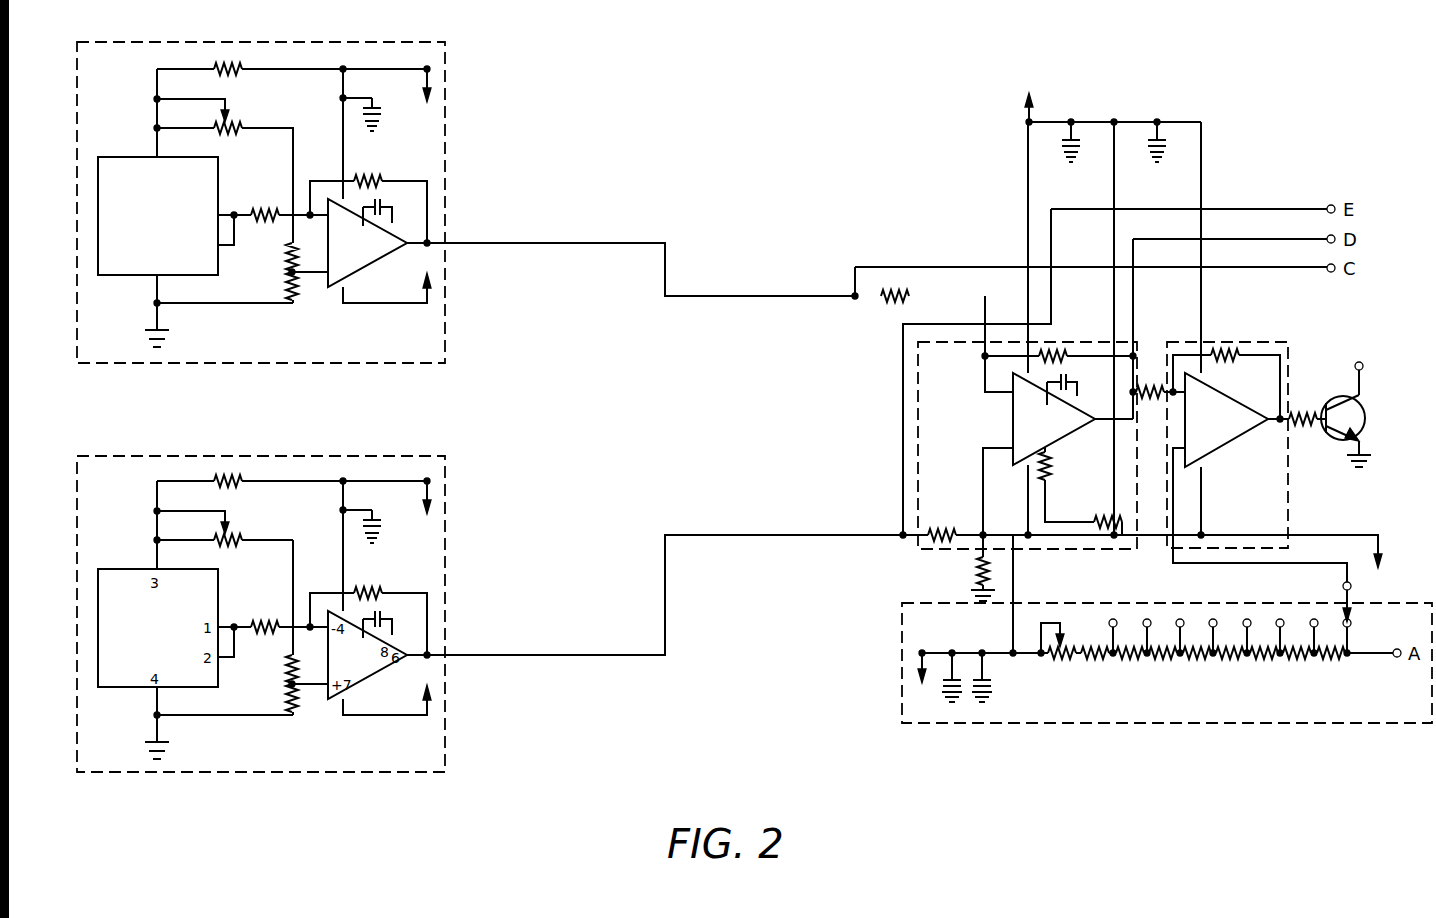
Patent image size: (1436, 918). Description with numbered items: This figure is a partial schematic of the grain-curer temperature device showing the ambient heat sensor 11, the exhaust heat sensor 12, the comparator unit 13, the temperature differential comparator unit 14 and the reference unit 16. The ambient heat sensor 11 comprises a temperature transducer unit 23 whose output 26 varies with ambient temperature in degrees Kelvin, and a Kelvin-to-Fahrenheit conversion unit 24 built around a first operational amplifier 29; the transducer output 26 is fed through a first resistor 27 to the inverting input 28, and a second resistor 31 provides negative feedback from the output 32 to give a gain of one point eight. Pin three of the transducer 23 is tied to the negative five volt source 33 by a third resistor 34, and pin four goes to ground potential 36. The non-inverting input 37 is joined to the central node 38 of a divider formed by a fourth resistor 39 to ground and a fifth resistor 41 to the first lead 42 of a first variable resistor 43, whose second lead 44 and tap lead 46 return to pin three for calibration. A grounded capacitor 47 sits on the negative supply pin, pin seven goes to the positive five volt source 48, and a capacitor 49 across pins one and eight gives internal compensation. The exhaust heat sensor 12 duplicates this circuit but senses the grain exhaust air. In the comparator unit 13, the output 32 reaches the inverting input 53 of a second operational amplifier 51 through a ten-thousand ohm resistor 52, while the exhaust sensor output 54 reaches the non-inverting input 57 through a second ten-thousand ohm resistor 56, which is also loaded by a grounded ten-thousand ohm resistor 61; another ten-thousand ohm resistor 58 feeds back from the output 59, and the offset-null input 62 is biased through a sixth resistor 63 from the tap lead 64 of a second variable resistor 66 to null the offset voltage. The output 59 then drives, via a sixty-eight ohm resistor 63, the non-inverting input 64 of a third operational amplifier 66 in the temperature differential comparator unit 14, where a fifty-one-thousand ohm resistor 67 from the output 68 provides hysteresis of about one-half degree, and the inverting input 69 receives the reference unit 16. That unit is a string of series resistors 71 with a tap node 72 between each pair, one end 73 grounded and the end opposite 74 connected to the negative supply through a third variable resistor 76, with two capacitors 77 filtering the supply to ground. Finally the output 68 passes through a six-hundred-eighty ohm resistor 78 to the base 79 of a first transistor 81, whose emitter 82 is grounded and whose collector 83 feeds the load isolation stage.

The ambient heat sensor 11 is at (452, 120).
The exhaust heat sensor 12 is at (455, 728).
The comparator unit 13 is at (905, 478).
The temperature differential comparator unit 14 is at (1283, 336).
The reference unit 16 is at (950, 732).
The temperature transducer unit 23 is at (138, 158).
The Kelvin-to-Fahrenheit conversion unit 24 is at (416, 205).
The output 26 is at (220, 215).
The first resistor 27 is at (256, 214).
The inverting input 28 is at (327, 216).
The first operational amplifier 29 is at (355, 265).
The second resistor 31 is at (366, 178).
The output 32 is at (430, 245).
The -5 volt source 33 is at (430, 72).
The third resistor 34 is at (226, 62).
The ground potential 36 is at (160, 322).
The non-inverting input 37 is at (328, 276).
The central node 38 is at (290, 270).
The fourth resistor 39 is at (288, 290).
The fifth resistor 41 is at (286, 248).
The first lead 42 is at (268, 127).
The first variable resistor 43 is at (232, 120).
The second lead 44 is at (215, 126).
The tap lead 46 is at (220, 98).
The grounded capacitor 47 is at (375, 110).
The +5 volt source 48 is at (436, 293).
The capacitor 49 is at (381, 200).
The second operational amplifier 51 is at (1022, 412).
The 10,000 ohm resistor 52 is at (895, 294).
The inverting input 53 is at (1010, 392).
The output 54 is at (430, 657).
The second 10,000 ohm resistor 56 is at (942, 542).
The non-inverting input 57 is at (1010, 448).
The 10,000 ohm resistor 58 is at (1050, 352).
The output 59 is at (1088, 418).
The grounded 10,000 ohm resistor 61 is at (978, 576).
The offset-null input 62 is at (1048, 456).
The sixth resistor 63 is at (1150, 385).
The tap lead 64 is at (1180, 393).
The second variable resistor 66 is at (1100, 520).
The 51,000 ohm resistor 67 is at (1224, 350).
The output 68 is at (1283, 425).
The inverting input 69 is at (1180, 448).
The resistors 71 is at (1188, 660).
The tap node 72 is at (1213, 618).
The end 73 is at (1362, 656).
The end opposite 74 is at (1078, 655).
The third variable resistor 76 is at (1062, 658).
The capacitors 77 is at (950, 668).
The 680 ohm resistor 78 is at (1298, 414).
The base 79 is at (1320, 430).
The first transistor 81 is at (1366, 419).
The emitter 82 is at (1360, 432).
The collector 83 is at (1345, 410).